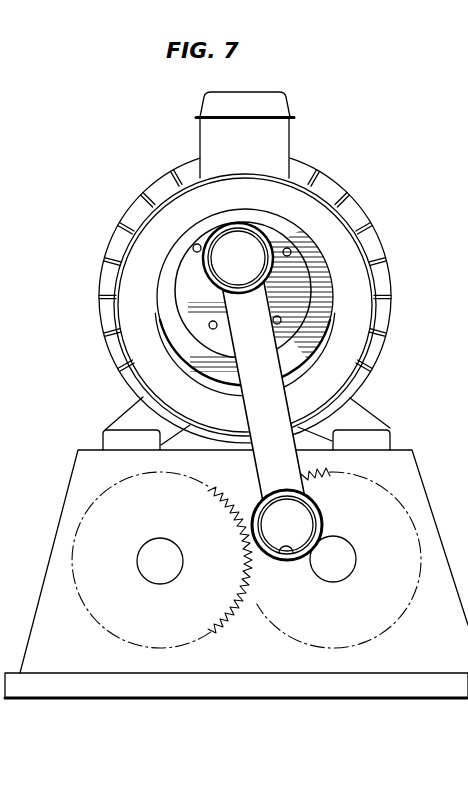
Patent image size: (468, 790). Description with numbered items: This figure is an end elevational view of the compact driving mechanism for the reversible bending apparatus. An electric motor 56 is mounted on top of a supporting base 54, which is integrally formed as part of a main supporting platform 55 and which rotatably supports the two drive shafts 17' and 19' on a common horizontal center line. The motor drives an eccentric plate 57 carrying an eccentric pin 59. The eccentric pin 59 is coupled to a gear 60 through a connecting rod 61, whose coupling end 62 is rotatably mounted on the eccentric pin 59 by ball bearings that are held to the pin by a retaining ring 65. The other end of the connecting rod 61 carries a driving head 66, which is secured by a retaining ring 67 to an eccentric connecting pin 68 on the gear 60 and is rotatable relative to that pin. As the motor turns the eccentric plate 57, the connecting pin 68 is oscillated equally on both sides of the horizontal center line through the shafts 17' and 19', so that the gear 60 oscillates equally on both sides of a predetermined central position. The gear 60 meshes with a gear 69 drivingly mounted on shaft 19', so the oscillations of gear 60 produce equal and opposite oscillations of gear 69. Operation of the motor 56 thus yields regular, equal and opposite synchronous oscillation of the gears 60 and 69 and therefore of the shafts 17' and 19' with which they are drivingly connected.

The supporting base 54 is at (403, 466).
The main supporting platform 55 is at (362, 683).
The electric motor 56 is at (358, 299).
The eccentric plate 57 is at (190, 260).
The eccentric pin 59 is at (240, 243).
The gear 60 is at (260, 612).
The connecting rod 61 is at (258, 462).
The coupling end 62 is at (263, 233).
The retaining ring 65 is at (270, 242).
The driving head 66 is at (321, 526).
The retaining ring 67 is at (300, 517).
The eccentric connecting pin 68 is at (289, 549).
The gear 69 is at (227, 617).
The drive shaft 17' is at (339, 560).
The drive shaft 19' is at (141, 560).